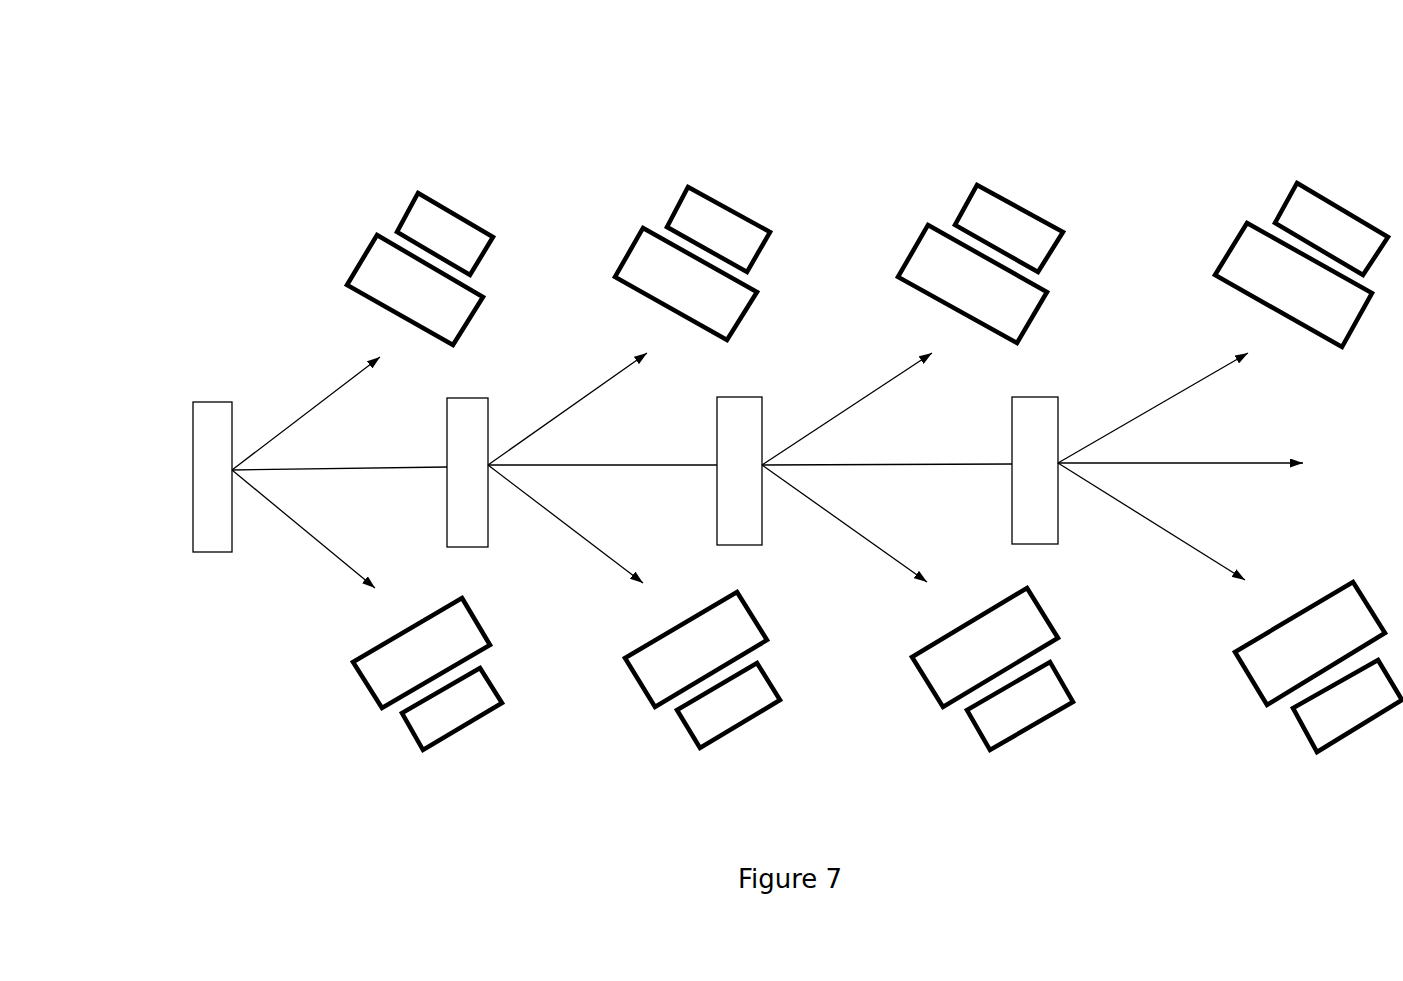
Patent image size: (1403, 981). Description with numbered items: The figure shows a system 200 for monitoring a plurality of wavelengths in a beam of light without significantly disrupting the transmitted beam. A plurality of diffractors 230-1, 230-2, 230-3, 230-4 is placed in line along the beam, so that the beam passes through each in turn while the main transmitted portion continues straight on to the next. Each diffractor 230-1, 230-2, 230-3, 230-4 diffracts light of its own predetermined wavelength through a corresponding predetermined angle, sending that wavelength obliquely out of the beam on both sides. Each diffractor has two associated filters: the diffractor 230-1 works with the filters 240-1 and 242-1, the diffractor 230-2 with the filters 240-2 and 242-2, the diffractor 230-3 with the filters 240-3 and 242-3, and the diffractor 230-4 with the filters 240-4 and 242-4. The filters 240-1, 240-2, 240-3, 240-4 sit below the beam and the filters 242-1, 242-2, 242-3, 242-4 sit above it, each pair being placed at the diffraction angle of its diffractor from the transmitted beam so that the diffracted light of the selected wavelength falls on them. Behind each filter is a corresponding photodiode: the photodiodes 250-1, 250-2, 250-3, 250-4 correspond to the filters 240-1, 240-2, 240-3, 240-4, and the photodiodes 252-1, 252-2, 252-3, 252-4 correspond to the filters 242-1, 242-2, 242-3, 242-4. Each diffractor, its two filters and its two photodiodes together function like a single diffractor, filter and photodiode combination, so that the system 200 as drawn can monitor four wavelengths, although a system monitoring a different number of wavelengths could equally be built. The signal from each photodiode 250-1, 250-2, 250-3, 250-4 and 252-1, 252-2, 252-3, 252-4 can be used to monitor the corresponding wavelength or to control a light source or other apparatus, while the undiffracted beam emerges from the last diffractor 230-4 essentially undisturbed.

The system 200 is at (789, 395).
The diffractor 230-1 is at (216, 506).
The diffractor 230-2 is at (422, 472).
The diffractor 230-3 is at (690, 471).
The diffractor 230-4 is at (986, 470).
The filter 240-1 is at (400, 659).
The filter 240-2 is at (671, 654).
The filter 240-3 is at (957, 651).
The filter 240-4 is at (1276, 646).
The filter 242-1 is at (383, 290).
The filter 242-2 is at (651, 284).
The filter 242-3 is at (937, 284).
The filter 242-4 is at (1252, 285).
The photodiode 250-1 is at (411, 729).
The photodiode 250-2 is at (684, 724).
The photodiode 250-3 is at (973, 723).
The photodiode 250-4 is at (1294, 719).
The photodiode 252-1 is at (399, 222).
The photodiode 252-2 is at (671, 218).
The photodiode 252-3 is at (959, 218).
The photodiode 252-4 is at (1278, 219).